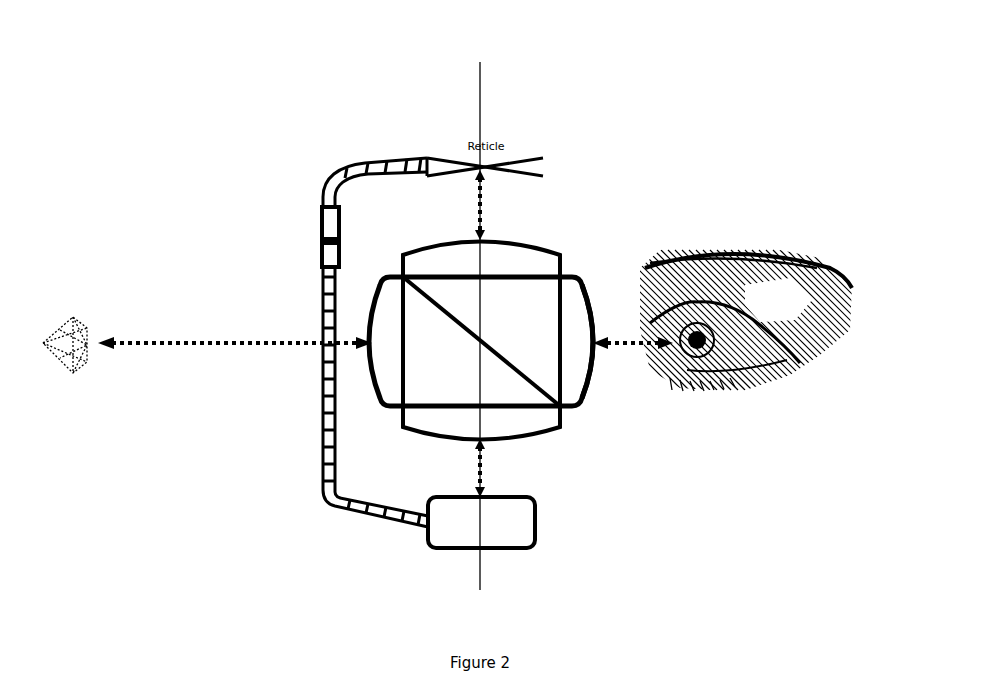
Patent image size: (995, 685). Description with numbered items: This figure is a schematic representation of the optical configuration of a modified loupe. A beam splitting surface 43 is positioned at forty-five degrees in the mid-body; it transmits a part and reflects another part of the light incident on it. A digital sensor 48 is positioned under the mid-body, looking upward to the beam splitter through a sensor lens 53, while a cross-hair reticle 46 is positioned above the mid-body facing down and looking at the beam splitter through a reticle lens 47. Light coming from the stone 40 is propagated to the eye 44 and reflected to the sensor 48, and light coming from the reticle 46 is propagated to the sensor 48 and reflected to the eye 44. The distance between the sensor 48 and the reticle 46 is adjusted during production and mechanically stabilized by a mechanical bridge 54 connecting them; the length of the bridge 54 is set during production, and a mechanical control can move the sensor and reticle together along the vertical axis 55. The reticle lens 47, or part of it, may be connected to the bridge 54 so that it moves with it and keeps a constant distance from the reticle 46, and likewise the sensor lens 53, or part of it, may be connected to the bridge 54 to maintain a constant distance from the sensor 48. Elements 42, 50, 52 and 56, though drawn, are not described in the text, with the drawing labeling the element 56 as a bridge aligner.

The stone 40 is at (72, 318).
The beam splitter cube 42 is at (563, 272).
The beam splitting surface 43 is at (528, 378).
The eye 44 is at (718, 260).
The reticle 46 is at (540, 158).
The reticle lens 47 is at (542, 243).
The sensor 48 is at (535, 543).
The optical housing 50 is at (372, 365).
The eyepiece lens 52 is at (588, 397).
The sensor lens 53 is at (560, 428).
The mechanical bridge 54 is at (338, 505).
The vertical axis 55 is at (473, 98).
The bridge aligner 56 is at (322, 206).